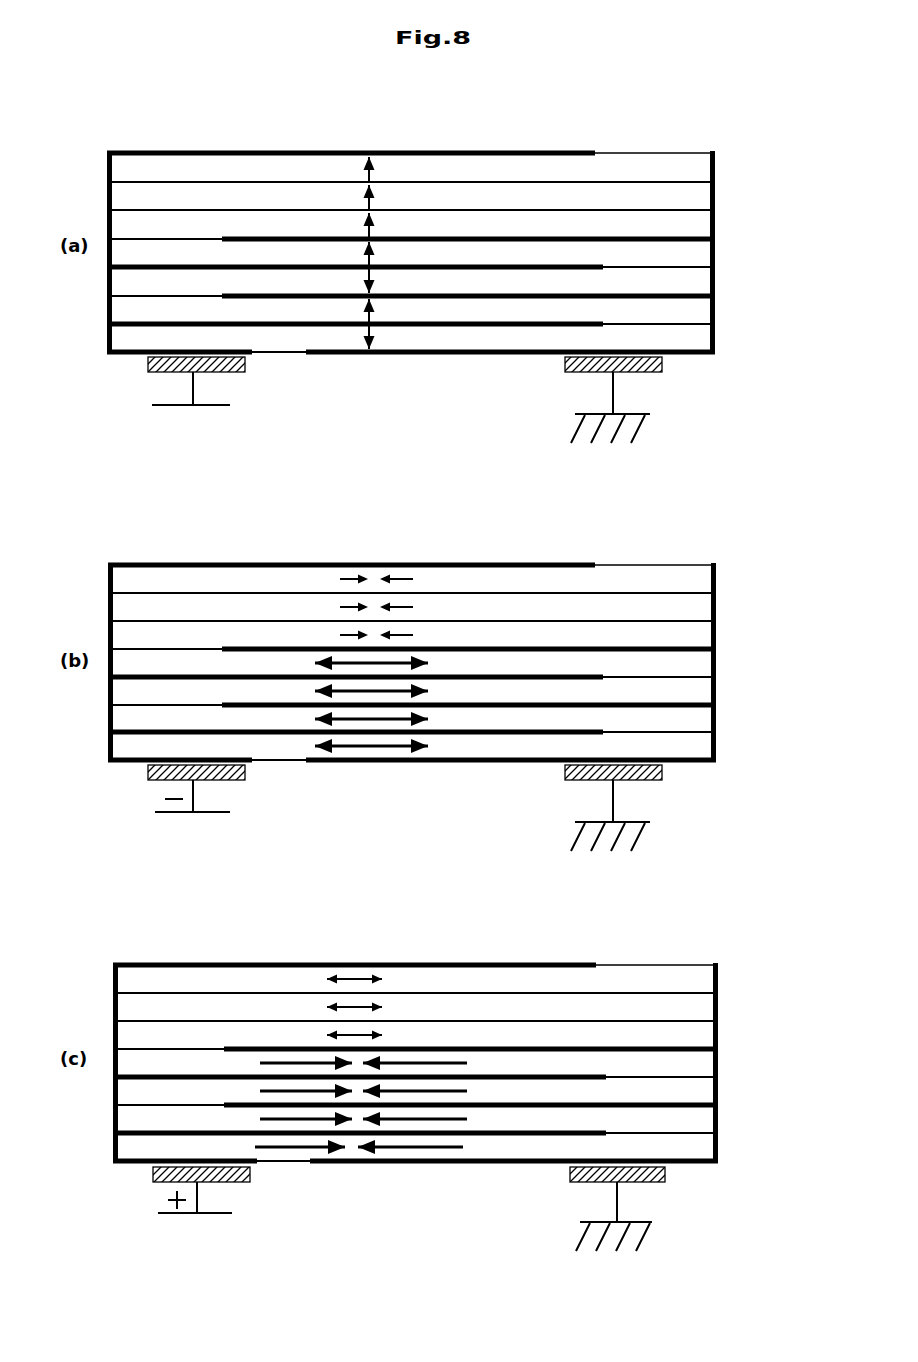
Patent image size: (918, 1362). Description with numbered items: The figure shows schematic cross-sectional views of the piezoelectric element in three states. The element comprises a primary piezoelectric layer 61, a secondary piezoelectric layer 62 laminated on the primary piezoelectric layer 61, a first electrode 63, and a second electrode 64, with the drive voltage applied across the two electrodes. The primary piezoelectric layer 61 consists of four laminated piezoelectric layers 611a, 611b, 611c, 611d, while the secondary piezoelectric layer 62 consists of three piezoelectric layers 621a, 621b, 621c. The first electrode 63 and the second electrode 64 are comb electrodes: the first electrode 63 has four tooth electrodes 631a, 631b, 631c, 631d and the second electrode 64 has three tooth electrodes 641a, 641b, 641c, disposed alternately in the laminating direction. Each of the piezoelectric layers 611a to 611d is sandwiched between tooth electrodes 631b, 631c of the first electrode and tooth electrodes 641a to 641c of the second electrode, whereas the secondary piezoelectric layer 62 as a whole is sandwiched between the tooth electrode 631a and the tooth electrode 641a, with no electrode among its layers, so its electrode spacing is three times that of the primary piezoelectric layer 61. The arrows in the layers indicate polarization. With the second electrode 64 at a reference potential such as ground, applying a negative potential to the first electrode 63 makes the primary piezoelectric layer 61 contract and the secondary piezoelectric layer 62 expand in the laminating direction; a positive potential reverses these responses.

The primary piezoelectric layer 61 is at (816, 1118).
The piezoelectric layer 611a is at (743, 1064).
The piezoelectric layer 611b is at (743, 1090).
The piezoelectric layer 611c is at (743, 1116).
The piezoelectric layer 611d is at (743, 1151).
The secondary piezoelectric layer 62 is at (811, 1010).
The piezoelectric layer 621a is at (743, 983).
The piezoelectric layer 621b is at (743, 1009).
The piezoelectric layer 621c is at (743, 1036).
The first electrode 63 is at (118, 960).
The tooth electrode 631a is at (301, 964).
The tooth electrode 631b is at (500, 1079).
The tooth electrode 631c is at (353, 1135).
The tooth electrode 631d is at (141, 1165).
The second electrode 64 is at (718, 1194).
The tooth electrode 641a is at (417, 1046).
The tooth electrode 641b is at (527, 1103).
The tooth electrode 641c is at (552, 1165).